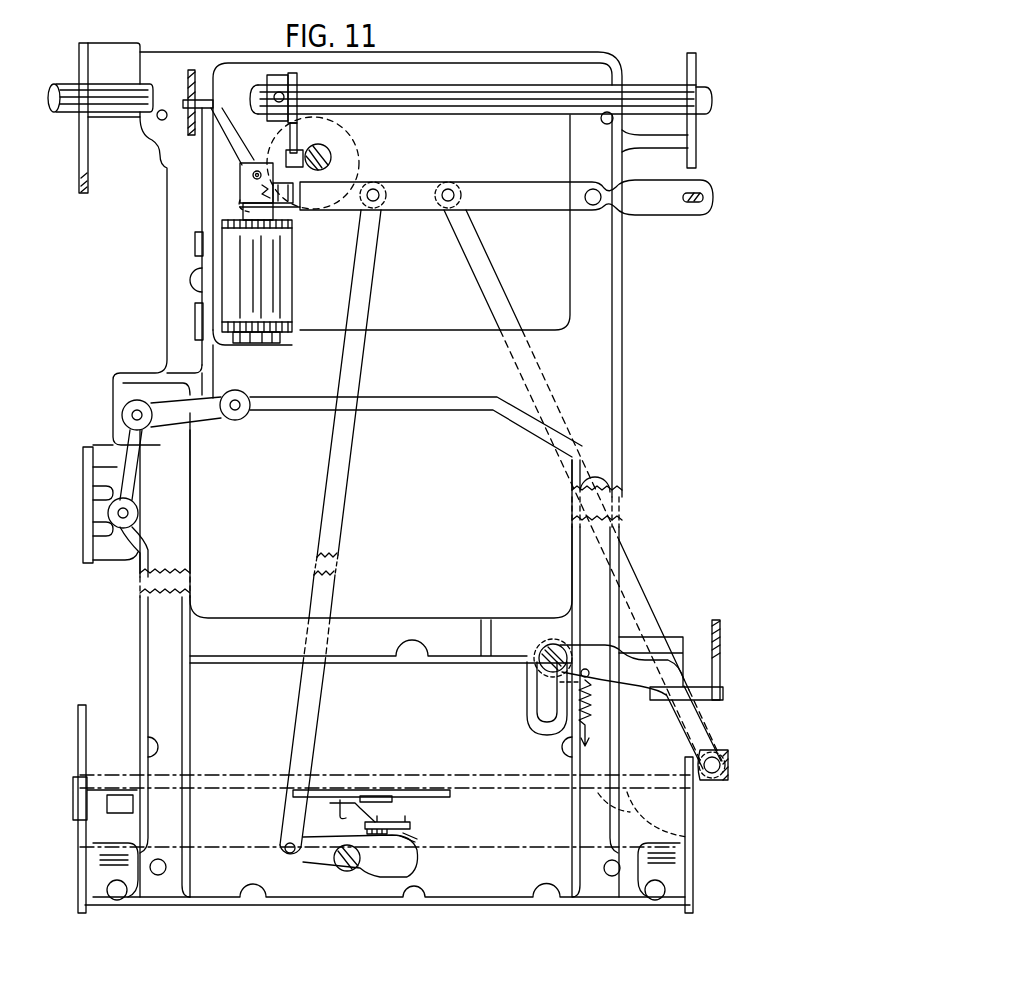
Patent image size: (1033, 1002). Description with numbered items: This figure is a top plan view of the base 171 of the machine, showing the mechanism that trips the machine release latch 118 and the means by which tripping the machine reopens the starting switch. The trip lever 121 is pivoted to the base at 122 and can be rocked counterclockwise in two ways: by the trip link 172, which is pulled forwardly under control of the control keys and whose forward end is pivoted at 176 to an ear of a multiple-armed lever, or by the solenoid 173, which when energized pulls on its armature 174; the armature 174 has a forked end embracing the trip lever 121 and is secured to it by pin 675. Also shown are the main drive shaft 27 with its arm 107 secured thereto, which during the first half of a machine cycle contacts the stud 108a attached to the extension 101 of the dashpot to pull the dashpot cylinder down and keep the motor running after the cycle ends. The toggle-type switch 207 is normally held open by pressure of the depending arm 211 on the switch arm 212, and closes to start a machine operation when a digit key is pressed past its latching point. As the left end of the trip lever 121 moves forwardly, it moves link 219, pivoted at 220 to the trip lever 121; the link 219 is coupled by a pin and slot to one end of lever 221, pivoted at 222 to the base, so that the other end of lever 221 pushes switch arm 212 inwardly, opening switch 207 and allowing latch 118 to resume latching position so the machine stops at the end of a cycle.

The main drive shaft 27 is at (507, 98).
The extension 101 is at (331, 157).
The arm 107 is at (297, 78).
The stud 108a is at (299, 150).
The machine release latch 118 is at (188, 73).
The trip lever 121 is at (237, 158).
The pivot 122 is at (585, 203).
The base 171 is at (398, 490).
The trip link 172 is at (470, 245).
The solenoid 173 is at (270, 278).
The armature 174 is at (273, 209).
The pivot 176 is at (710, 781).
The switch 207 is at (420, 790).
The depending arm 211 is at (370, 826).
The switch arm 212 is at (417, 832).
The link 219 is at (367, 313).
The pivot 220 is at (379, 188).
The lever 221 is at (407, 860).
The pivot 222 is at (343, 873).
The pin 675 is at (273, 135).